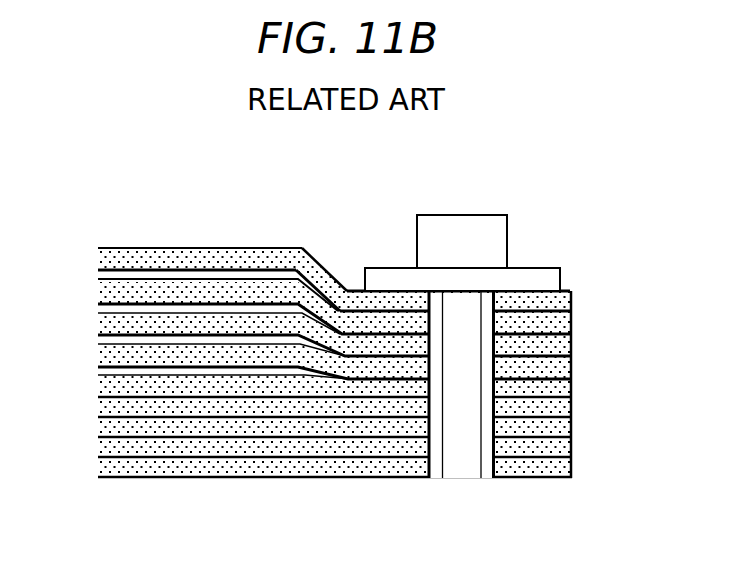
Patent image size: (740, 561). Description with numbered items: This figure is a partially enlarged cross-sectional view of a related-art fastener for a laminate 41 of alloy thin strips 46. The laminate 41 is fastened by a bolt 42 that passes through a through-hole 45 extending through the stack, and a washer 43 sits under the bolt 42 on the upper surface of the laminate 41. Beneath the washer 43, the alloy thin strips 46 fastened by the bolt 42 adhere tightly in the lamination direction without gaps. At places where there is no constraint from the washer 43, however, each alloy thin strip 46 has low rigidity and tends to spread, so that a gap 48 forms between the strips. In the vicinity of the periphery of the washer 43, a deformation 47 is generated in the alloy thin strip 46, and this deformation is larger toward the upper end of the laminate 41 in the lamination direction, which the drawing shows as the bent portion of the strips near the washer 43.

The laminate 41 is at (582, 296).
The bolt 42 is at (457, 242).
The washer 43 is at (512, 282).
The through-hole 45 is at (490, 462).
The alloy thin strip 46 is at (213, 267).
The deformation 47 is at (322, 260).
The gap 48 is at (138, 278).